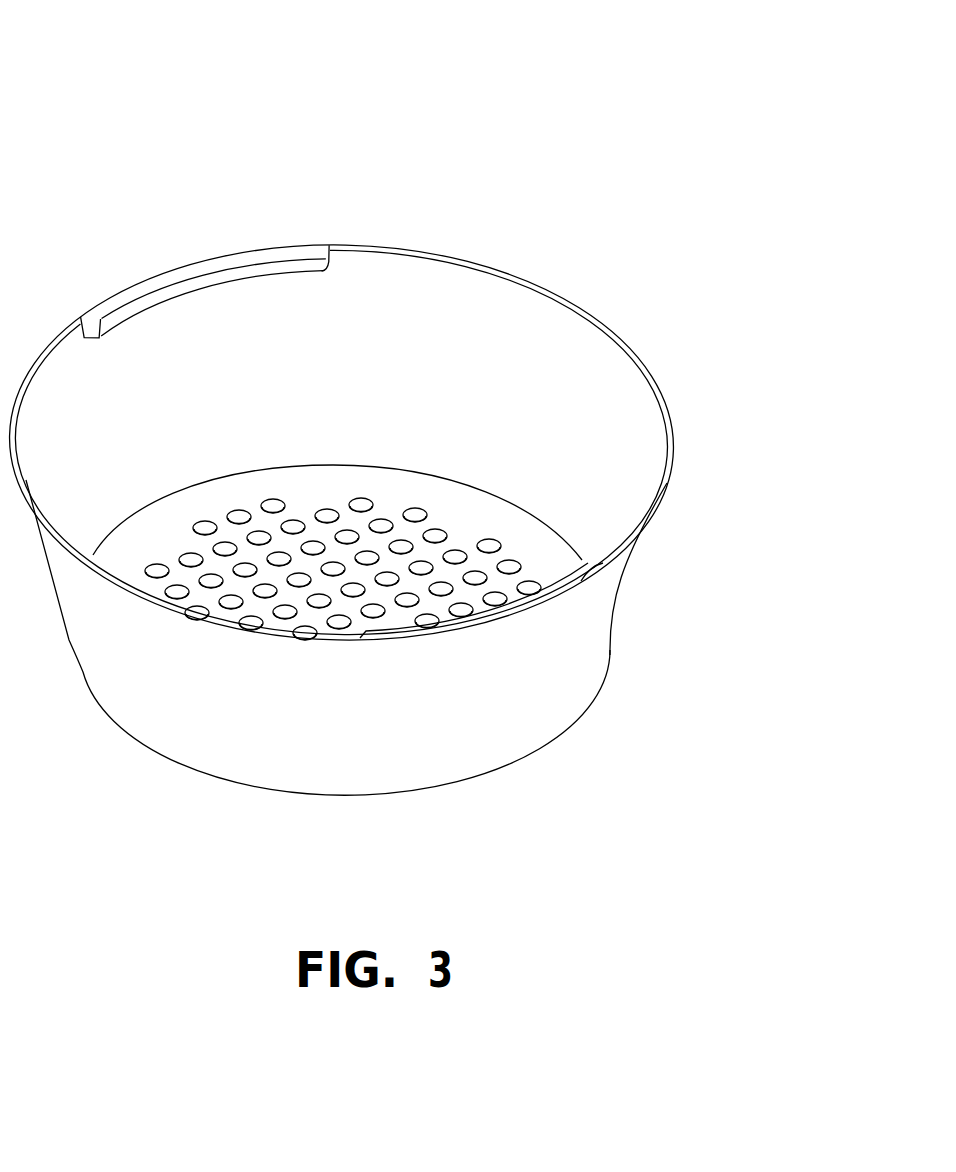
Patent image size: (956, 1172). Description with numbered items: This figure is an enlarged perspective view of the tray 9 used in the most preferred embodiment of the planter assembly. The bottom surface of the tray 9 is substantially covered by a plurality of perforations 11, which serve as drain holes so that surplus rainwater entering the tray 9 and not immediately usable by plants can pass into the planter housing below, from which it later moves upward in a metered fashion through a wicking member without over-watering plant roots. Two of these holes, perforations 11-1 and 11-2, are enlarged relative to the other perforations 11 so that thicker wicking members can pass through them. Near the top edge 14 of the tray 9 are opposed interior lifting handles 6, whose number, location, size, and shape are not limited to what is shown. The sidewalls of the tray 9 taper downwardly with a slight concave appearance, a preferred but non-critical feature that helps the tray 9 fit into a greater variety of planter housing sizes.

The tray 9 is at (154, 114).
The top edge 14 is at (601, 292).
The handles 6 is at (281, 279).
The perforations 11 is at (448, 521).
The perforation 11-1 is at (210, 570).
The perforation 11-2 is at (343, 522).